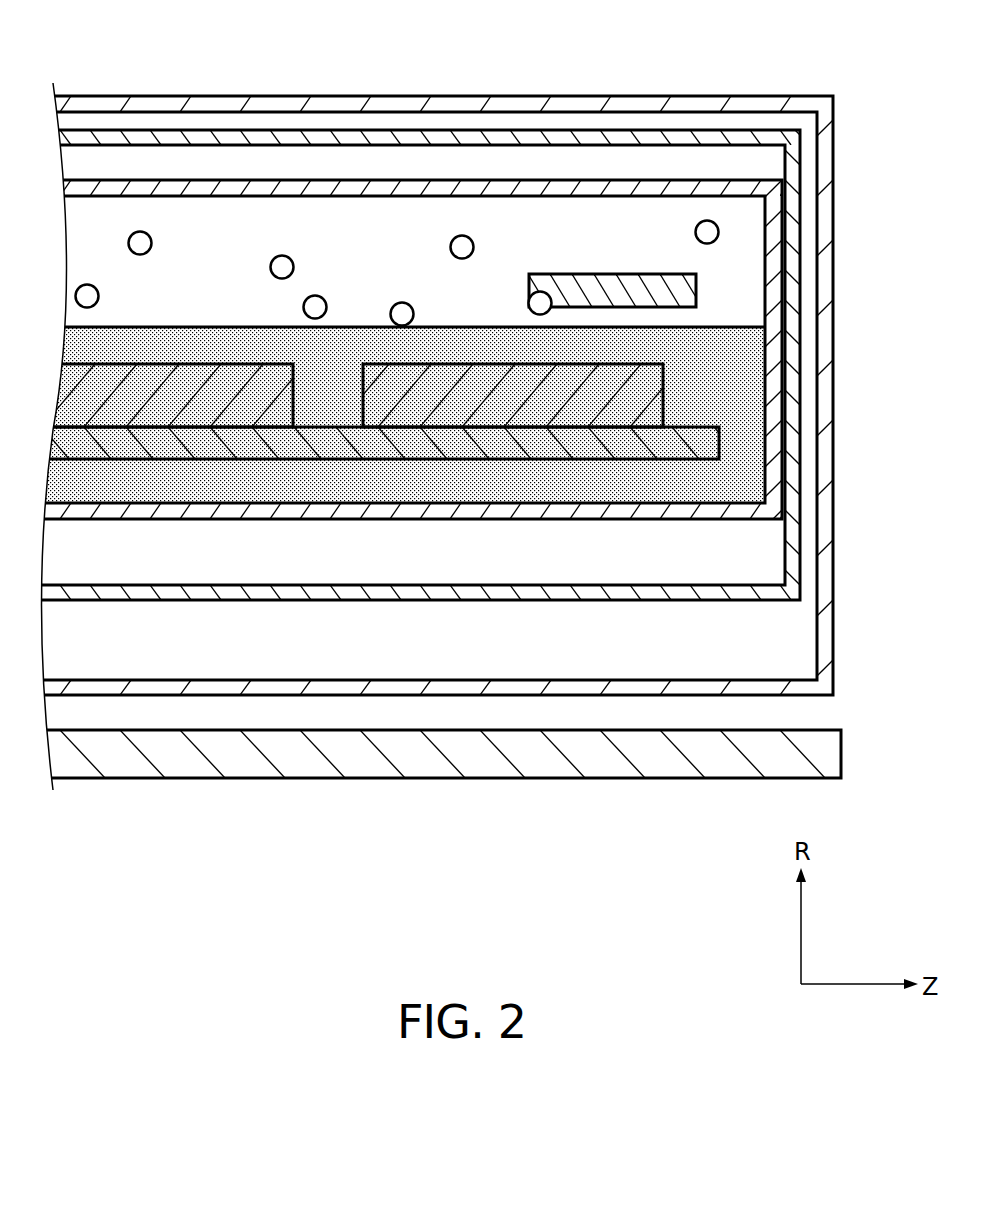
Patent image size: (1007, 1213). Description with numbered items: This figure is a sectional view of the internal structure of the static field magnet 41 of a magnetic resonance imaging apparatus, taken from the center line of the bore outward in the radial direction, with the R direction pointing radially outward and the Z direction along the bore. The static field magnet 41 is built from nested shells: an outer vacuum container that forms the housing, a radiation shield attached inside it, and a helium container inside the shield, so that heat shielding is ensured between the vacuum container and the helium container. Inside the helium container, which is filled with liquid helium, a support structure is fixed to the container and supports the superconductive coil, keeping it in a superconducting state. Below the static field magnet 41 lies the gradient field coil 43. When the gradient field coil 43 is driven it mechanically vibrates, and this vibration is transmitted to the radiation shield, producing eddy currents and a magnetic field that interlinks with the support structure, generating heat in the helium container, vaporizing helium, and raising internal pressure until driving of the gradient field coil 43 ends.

The static field magnet 41 is at (466, 402).
The gradient field coil 43 is at (826, 761).